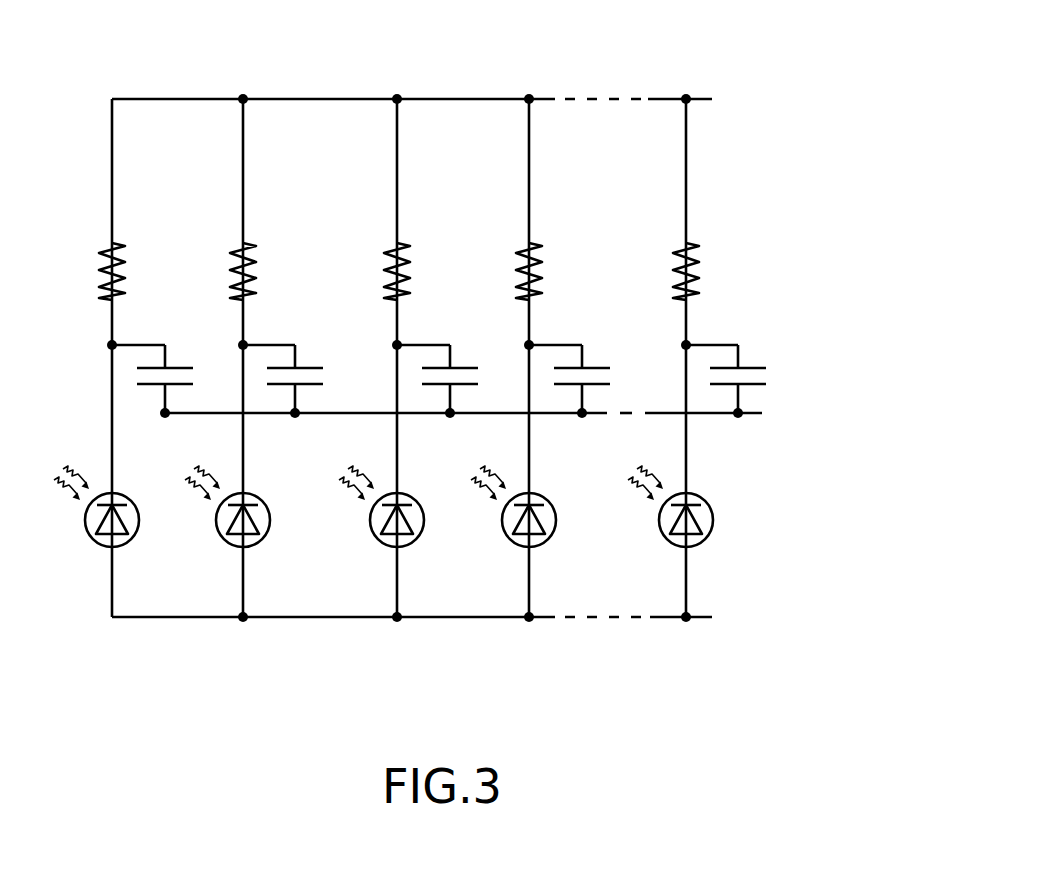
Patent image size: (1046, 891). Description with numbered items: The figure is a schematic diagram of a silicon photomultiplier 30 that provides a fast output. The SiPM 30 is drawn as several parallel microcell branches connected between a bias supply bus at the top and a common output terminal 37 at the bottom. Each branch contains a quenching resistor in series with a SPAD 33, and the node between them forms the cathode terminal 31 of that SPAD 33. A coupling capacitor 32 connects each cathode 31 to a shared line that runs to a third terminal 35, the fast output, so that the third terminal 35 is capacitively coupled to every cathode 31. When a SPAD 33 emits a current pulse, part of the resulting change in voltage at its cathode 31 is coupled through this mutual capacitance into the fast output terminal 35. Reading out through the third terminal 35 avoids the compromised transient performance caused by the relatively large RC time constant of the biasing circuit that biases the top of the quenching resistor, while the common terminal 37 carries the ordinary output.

The silicon photomultiplier 30 is at (730, 53).
The cathode terminal 31 is at (112, 493).
The fast output capacitor 32 is at (305, 365).
The SPAD 33 is at (410, 527).
The third terminal 35 is at (752, 413).
The terminal 37 is at (700, 617).